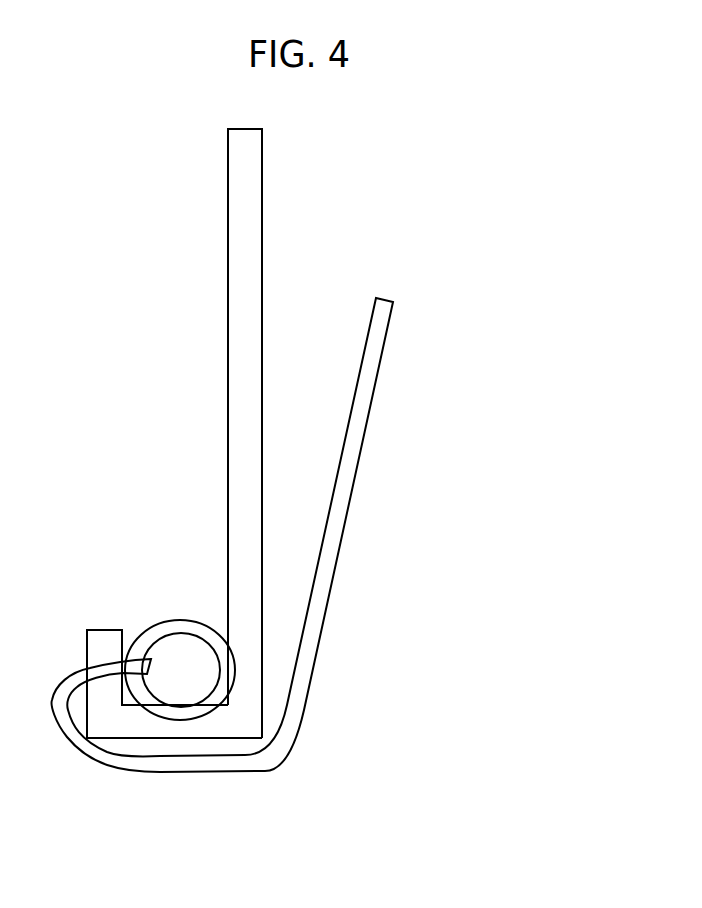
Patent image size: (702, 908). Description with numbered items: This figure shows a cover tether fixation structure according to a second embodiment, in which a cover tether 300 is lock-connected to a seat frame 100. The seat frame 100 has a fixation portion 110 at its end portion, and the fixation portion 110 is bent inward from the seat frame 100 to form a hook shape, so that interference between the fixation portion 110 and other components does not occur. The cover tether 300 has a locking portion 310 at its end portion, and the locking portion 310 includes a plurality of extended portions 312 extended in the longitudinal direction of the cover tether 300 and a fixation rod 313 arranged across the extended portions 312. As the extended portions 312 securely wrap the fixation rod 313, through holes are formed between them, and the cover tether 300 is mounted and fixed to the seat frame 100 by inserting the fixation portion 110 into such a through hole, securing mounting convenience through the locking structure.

The seat frame 100 is at (243, 312).
The fixation portion 110 is at (150, 725).
The cover tether 300 is at (348, 467).
The locking portion 310 is at (347, 657).
The extended portion 312 is at (193, 620).
The fixation rod 313 is at (185, 682).